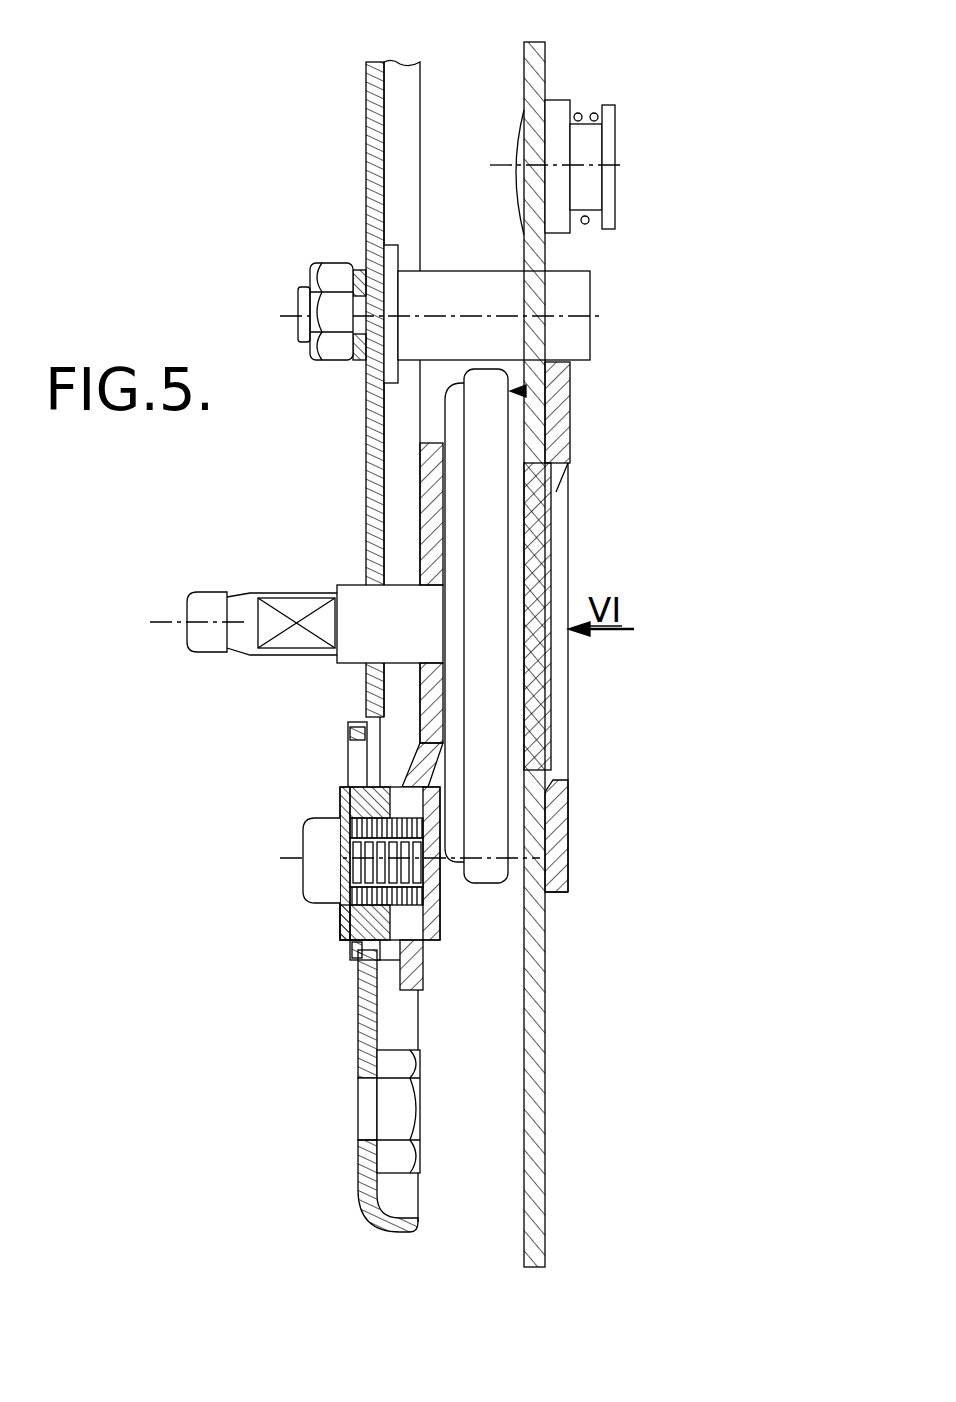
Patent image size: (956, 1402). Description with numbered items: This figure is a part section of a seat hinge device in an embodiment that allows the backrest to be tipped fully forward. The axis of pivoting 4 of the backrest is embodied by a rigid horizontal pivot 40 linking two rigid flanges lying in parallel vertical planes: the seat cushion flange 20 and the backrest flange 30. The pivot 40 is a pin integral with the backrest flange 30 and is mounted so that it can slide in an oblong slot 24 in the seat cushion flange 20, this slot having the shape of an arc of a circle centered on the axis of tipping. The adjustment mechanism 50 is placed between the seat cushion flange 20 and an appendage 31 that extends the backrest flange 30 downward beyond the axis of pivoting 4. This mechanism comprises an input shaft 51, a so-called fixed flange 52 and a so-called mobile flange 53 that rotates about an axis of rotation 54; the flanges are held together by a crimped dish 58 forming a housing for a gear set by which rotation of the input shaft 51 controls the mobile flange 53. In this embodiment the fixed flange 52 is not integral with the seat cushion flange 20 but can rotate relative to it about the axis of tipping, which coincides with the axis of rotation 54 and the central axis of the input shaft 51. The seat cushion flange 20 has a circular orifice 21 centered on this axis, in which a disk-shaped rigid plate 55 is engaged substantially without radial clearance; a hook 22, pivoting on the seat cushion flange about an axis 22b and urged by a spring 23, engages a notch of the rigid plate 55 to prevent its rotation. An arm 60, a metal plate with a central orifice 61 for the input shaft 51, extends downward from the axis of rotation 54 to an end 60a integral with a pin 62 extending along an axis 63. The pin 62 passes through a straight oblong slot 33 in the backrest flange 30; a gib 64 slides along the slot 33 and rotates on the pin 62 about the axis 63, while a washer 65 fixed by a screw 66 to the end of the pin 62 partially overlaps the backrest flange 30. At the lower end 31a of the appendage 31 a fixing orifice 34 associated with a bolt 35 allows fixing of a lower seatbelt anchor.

The seat cushion flange 20 is at (545, 46).
The circular orifice 21 is at (552, 790).
The hook 22 is at (558, 118).
The axis 22b is at (618, 165).
The spring 23 is at (583, 108).
The oblong slot 24 is at (526, 263).
The backrest flange 30 is at (372, 148).
The appendage 31 is at (372, 450).
The lower end 31a is at (390, 1218).
The oblong slot 33 is at (360, 763).
The fixing orifice 34 is at (367, 1107).
The bolt 35 is at (398, 1157).
The axis of pivoting 4 is at (296, 316).
The pivot 40 is at (548, 292).
The adjustment mechanism 50 is at (528, 390).
The input shaft 51 is at (290, 607).
The fixed flange 52 is at (512, 508).
The mobile flange 53 is at (457, 404).
The axis of rotation 54 is at (176, 616).
The rigid plate 55 is at (556, 438).
The crimped dish 58 is at (488, 547).
The arm 60 is at (443, 698).
The end 60a is at (412, 963).
The central orifice 61 is at (418, 580).
The pin 62 is at (397, 892).
The axis 63 is at (298, 854).
The gib 64 is at (346, 938).
The washer 65 is at (343, 913).
The screw 66 is at (318, 876).